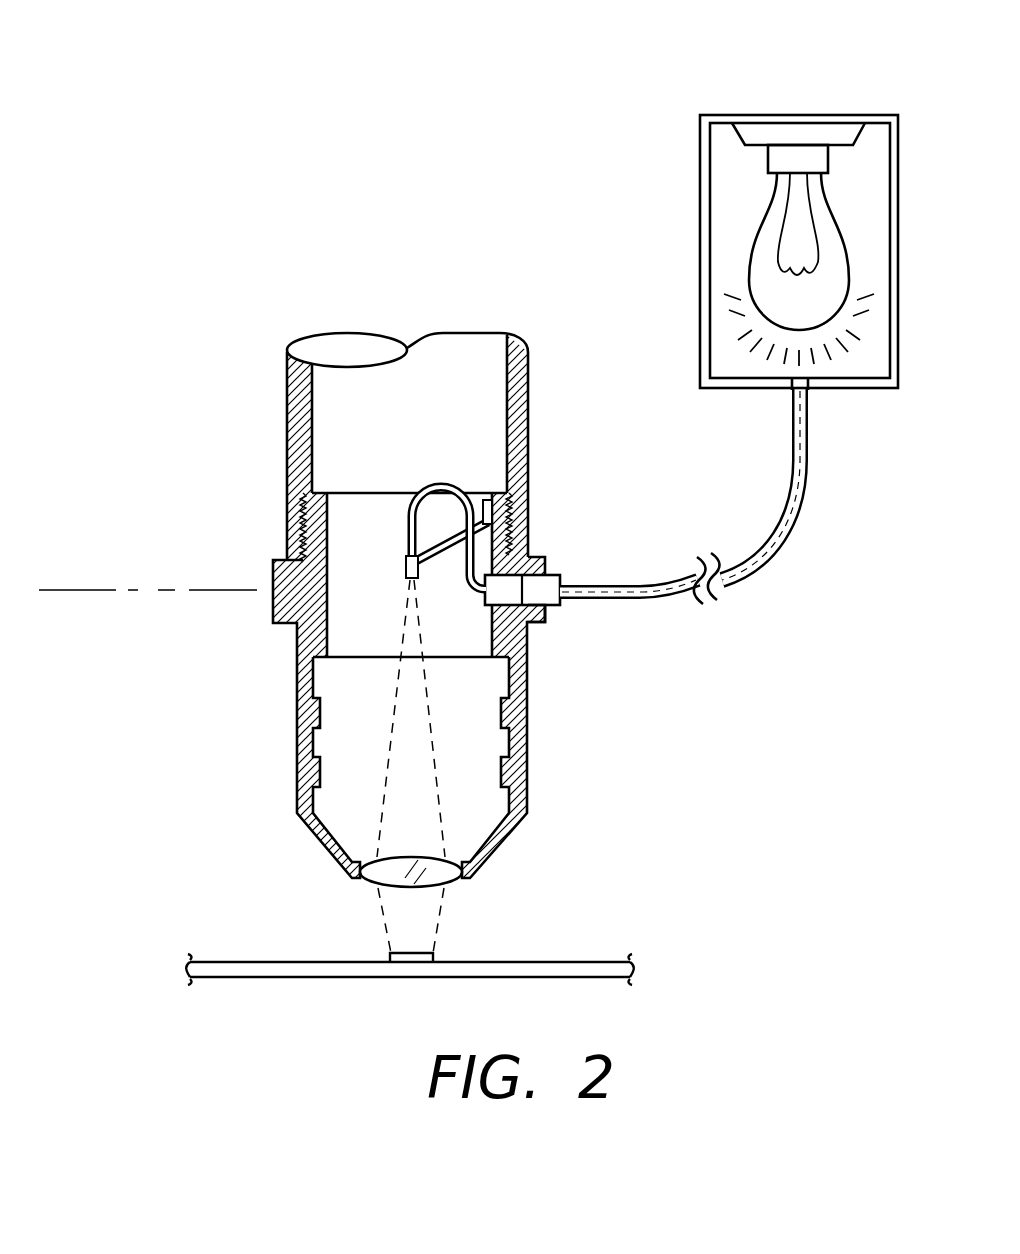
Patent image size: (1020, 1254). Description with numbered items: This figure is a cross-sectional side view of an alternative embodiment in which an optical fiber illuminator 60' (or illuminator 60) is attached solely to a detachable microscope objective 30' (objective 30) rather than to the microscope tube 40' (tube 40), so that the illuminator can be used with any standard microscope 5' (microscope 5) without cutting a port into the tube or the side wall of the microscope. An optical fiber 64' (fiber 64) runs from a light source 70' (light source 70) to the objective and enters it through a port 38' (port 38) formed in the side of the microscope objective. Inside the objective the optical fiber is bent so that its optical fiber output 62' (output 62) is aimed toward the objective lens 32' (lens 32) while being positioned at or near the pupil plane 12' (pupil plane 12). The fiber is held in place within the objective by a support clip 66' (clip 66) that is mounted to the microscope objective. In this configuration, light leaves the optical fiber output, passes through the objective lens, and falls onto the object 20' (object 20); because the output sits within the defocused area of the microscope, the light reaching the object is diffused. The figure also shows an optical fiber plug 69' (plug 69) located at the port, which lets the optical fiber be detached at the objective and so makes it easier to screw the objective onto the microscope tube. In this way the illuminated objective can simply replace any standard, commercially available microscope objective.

The microscope 5' is at (366, 560).
The pupil plane 12' is at (148, 554).
The object 20' is at (410, 940).
The microscope objective 30' is at (322, 685).
The objective lens 32' is at (451, 888).
The port 38' is at (542, 553).
The microscope tube 40' is at (459, 446).
The optical fiber illuminator 60' is at (415, 430).
The optical fiber output 62' is at (382, 563).
The optical fiber 64' is at (602, 491).
The support clip 66' is at (457, 492).
The optical fiber plug 69' is at (567, 648).
The light source 70' is at (755, 201).
The laser cutting head assembly 5 is at (366, 560).
The optical axis 12 is at (148, 554).
The workpiece 20 is at (410, 940).
The nozzle body 30 is at (322, 685).
The focusing lens 32 is at (451, 888).
The fitting 38 is at (542, 553).
The housing 40 is at (459, 446).
The optical fiber 60 is at (415, 430).
The fiber end 62 is at (382, 563).
The fiber optic cable 64 is at (602, 491).
The support strut 66 is at (457, 492).
The flange 69 is at (567, 648).
The light source 70 is at (755, 201).